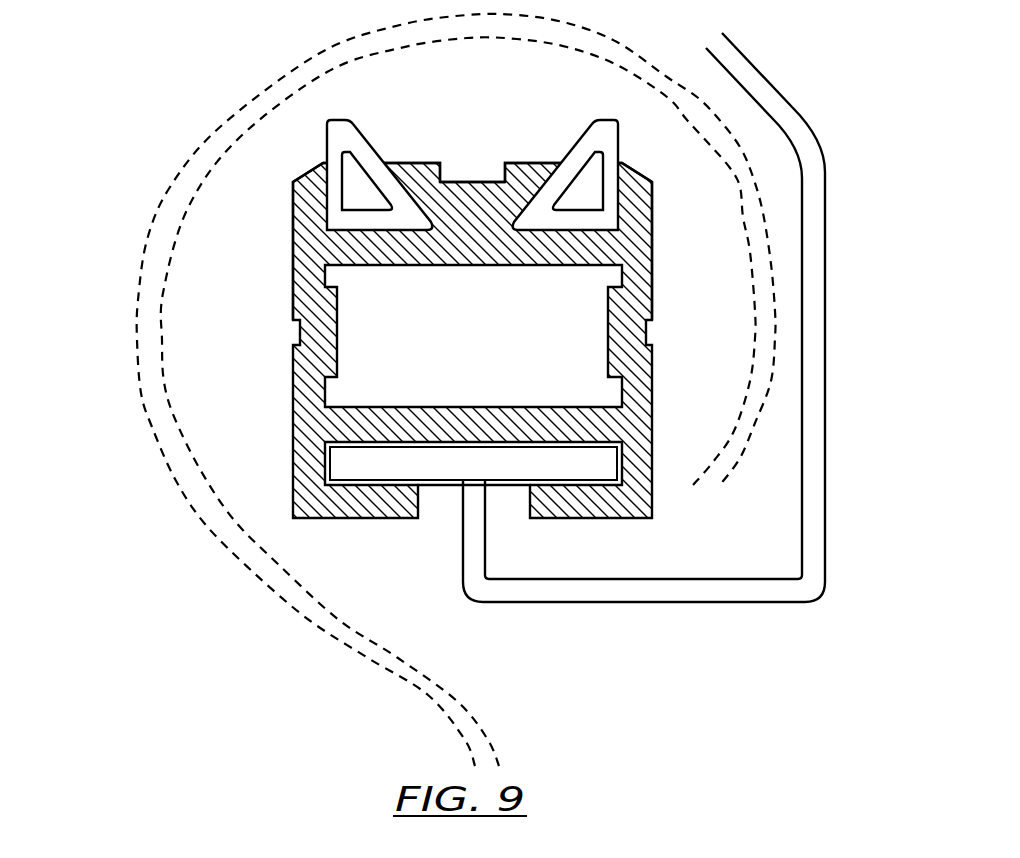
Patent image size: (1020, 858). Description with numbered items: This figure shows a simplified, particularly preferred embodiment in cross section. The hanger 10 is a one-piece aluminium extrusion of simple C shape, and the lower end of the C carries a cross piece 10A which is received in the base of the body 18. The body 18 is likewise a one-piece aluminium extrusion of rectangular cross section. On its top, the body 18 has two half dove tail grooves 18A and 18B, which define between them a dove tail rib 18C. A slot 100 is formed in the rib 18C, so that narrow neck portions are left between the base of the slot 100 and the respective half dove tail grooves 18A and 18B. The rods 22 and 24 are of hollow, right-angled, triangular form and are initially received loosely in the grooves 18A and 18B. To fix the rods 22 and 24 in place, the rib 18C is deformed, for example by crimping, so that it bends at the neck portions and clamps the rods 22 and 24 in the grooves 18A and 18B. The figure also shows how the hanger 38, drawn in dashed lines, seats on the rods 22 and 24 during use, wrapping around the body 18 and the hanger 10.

The hanger 10 is at (835, 258).
The cross piece 10A is at (562, 465).
The body 18 is at (285, 423).
The half dove tail groove 18A is at (296, 207).
The half dove tail groove 18B is at (622, 215).
The dove tail rib 18C is at (430, 172).
The rod 22 is at (326, 136).
The rod 24 is at (622, 138).
The hanger 38 is at (166, 468).
The slot 100 is at (493, 176).